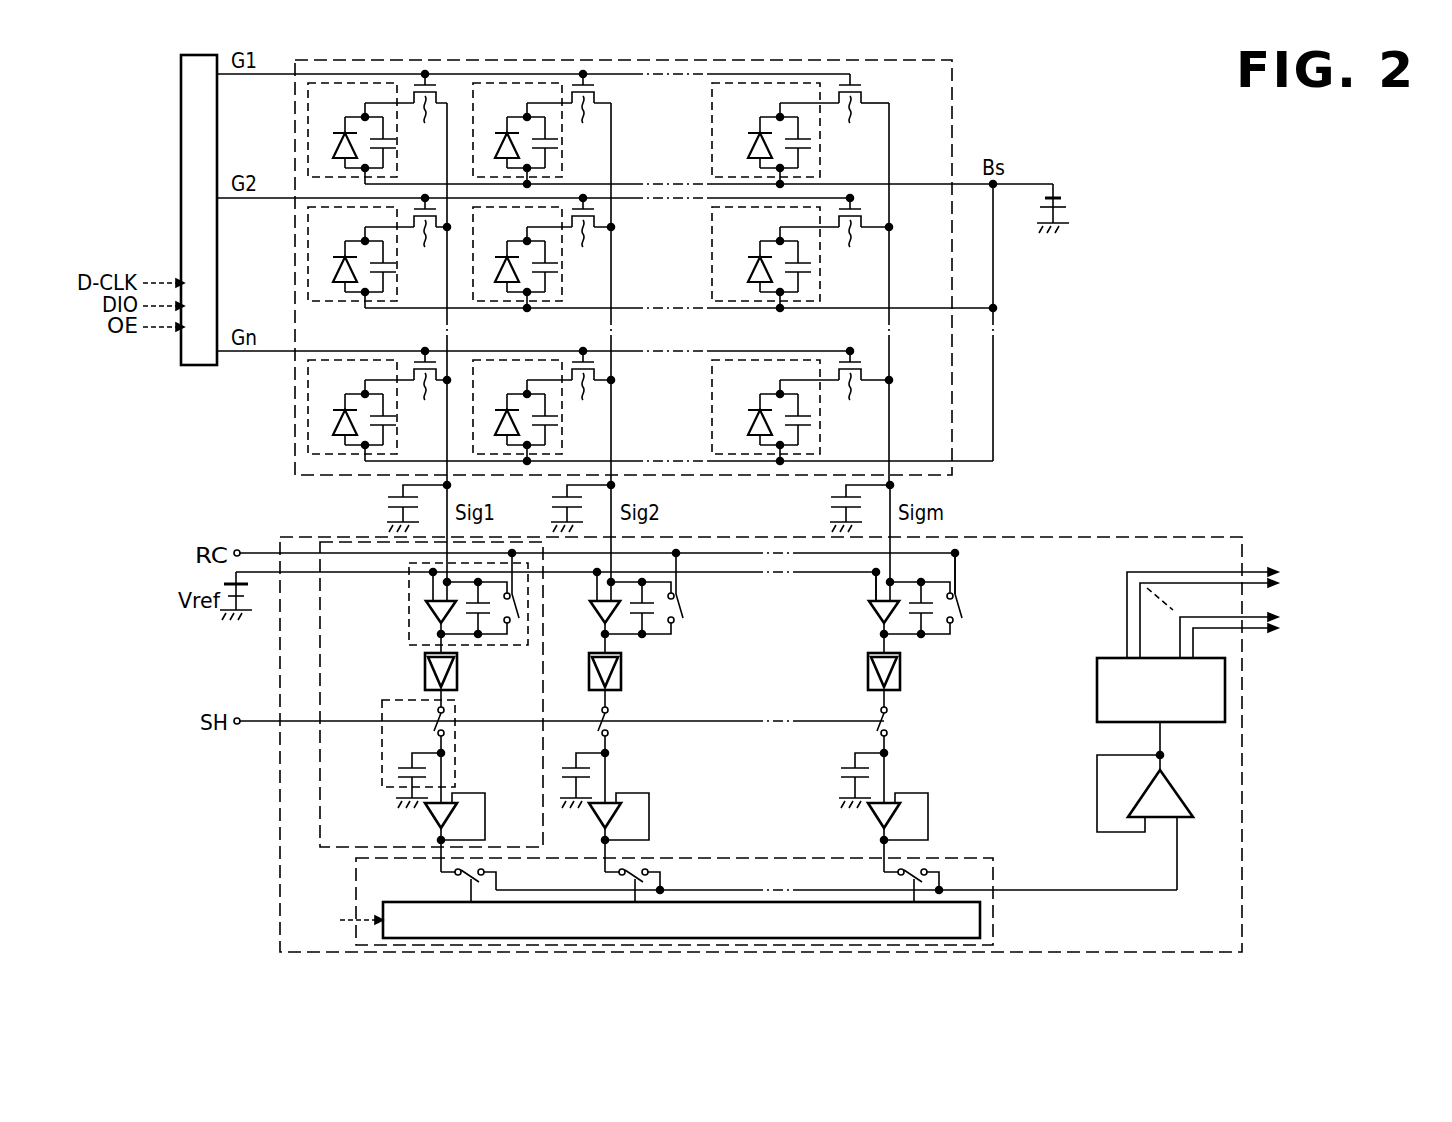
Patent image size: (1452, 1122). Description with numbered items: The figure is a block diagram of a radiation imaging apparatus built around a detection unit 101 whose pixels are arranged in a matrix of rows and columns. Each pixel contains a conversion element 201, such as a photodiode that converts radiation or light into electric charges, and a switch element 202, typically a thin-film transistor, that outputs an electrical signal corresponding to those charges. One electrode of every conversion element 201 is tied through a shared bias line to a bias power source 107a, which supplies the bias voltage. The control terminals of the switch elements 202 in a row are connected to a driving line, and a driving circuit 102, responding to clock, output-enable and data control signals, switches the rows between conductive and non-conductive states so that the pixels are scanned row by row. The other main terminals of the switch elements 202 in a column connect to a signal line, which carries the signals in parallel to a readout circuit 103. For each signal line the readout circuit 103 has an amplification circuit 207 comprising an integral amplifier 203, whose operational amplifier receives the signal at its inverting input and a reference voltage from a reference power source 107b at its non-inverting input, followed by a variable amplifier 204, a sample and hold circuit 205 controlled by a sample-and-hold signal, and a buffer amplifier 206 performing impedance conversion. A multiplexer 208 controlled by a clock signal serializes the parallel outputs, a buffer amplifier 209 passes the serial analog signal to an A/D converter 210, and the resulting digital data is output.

The detection unit 101 is at (953, 100).
The driving circuit 102 is at (181, 95).
The readout circuit 103 is at (280, 830).
The bias power source 107a is at (1062, 197).
The reference power source 107b is at (222, 582).
The conversion element 201 is at (712, 133).
The switch element 202 is at (862, 88).
The integral amplifier 203 is at (409, 594).
The variable amplifier 204 is at (424, 670).
The sample and hold circuit 205 is at (382, 773).
The buffer amplifier 206 is at (430, 820).
The amplification circuit 207 is at (320, 650).
The multiplexer 208 is at (356, 880).
The buffer amplifier 209 is at (1175, 792).
The A/D converter 210 is at (1097, 695).